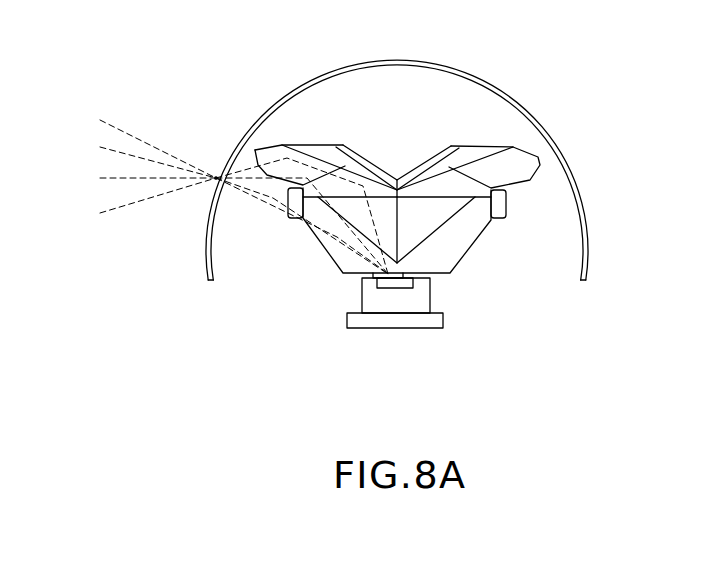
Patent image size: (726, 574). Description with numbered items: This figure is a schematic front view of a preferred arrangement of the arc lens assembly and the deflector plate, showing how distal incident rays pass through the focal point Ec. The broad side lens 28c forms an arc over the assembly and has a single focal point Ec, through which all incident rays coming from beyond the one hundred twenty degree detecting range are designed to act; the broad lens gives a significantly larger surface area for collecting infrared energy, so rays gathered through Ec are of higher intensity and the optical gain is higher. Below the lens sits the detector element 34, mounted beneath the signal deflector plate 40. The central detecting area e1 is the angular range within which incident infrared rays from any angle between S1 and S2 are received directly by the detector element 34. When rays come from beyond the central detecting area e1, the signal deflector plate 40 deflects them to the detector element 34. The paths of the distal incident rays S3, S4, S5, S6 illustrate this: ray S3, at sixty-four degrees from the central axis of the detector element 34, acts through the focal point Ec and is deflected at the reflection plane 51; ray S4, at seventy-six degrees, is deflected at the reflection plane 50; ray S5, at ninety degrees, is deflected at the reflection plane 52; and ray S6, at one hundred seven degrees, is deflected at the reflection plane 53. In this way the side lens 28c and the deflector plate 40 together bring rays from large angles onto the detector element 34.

The central detecting area e1 is at (592, 151).
The incident infrared ray boundary S1 is at (172, 130).
The incident infrared ray boundary S2 is at (617, 130).
The distal incident infrared ray S3 is at (140, 140).
The distal incident infrared ray S4 is at (140, 156).
The distal incident infrared ray S5 is at (140, 180).
The distal incident infrared ray S6 is at (140, 203).
The single focal point Ec is at (210, 184).
The broad side lens 28c is at (208, 273).
The signal deflector plate 40 is at (542, 318).
The detector element 34 is at (400, 302).
The reflection plane 50 is at (420, 220).
The reflection plane 51 is at (337, 237).
The reflection plane 52 is at (357, 177).
The reflection plane 53 is at (300, 163).